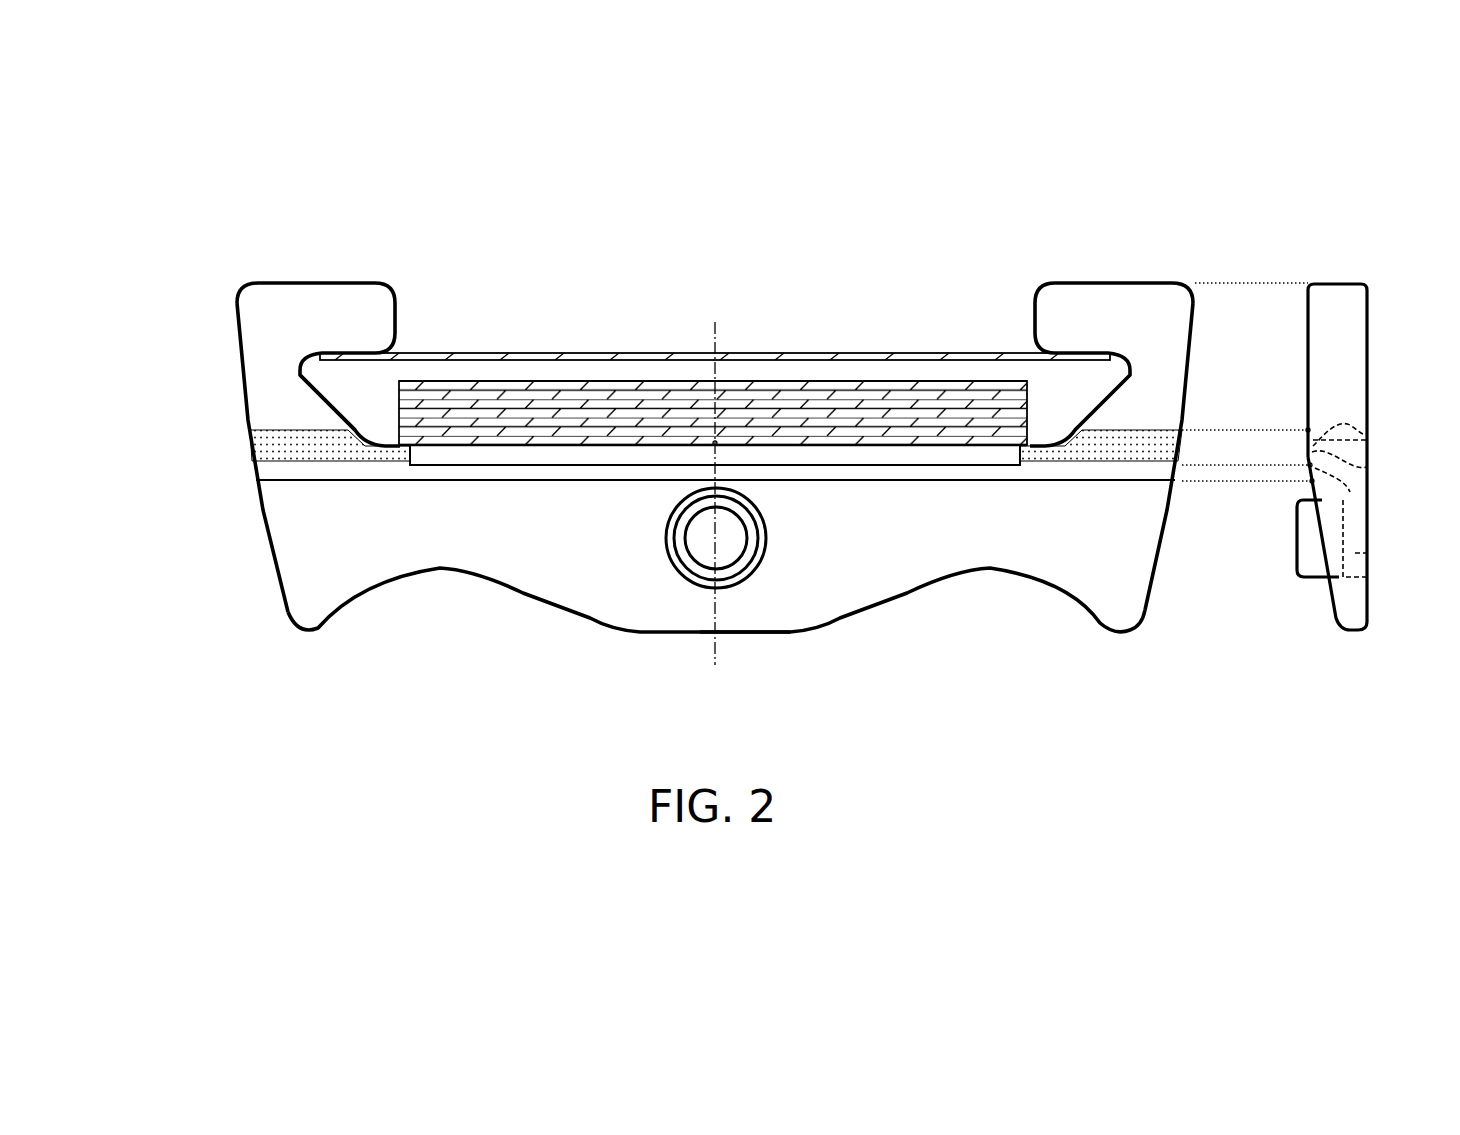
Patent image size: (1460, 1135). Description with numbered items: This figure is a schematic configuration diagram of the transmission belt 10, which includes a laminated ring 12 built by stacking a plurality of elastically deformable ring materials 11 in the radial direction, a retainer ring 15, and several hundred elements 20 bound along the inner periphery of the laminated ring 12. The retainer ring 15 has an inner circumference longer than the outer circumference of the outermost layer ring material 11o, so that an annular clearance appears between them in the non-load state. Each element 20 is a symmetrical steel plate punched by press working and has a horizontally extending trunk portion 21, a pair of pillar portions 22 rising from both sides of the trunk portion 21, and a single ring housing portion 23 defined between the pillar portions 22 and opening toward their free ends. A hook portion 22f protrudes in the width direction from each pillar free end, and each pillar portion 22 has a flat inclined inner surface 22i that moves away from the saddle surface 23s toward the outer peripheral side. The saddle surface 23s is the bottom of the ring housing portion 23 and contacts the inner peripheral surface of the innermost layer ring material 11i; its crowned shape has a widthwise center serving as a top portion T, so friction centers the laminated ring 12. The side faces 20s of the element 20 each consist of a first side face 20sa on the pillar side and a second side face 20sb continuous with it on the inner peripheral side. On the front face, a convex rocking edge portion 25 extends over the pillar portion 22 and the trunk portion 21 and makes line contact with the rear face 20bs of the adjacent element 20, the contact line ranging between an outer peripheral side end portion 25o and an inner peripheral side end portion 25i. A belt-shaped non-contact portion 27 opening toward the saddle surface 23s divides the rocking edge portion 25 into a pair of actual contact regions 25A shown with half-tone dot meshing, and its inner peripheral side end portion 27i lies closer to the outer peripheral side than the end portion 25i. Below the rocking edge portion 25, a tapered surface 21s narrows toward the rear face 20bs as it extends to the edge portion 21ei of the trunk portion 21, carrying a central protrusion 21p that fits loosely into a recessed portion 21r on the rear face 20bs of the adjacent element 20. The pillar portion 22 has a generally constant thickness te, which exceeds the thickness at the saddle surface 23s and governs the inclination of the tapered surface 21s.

The transmission belt 10 is at (765, 322).
The ring material 11 is at (1027, 417).
The outermost layer ring material 11o is at (833, 372).
The innermost layer ring material 11i is at (607, 437).
The laminated ring 12 is at (930, 374).
The retainer ring 15 is at (553, 357).
The element 20 is at (465, 576).
The side face 20s is at (142, 362).
The first side face 20sa is at (240, 374).
The second side face 20sb is at (246, 522).
The rear face 20bs is at (1367, 603).
The trunk portion 21 is at (823, 572).
The tapered surface 21s is at (1040, 533).
The protrusion 21p is at (693, 538).
The edge portion 21ei is at (762, 633).
The recessed portion 21r is at (1362, 556).
The pillar portion 22 is at (308, 307).
The inner surface 22i is at (356, 355).
The hook portion 22f is at (380, 317).
The ring housing portion 23 is at (381, 402).
The saddle surface 23s is at (460, 445).
The rocking edge portion 25 is at (1301, 451).
The actual contact region 25A is at (316, 437).
The outer peripheral side end portion 25o is at (1306, 428).
The inner peripheral side end portion 25i is at (1313, 481).
The non-contact portion 27 is at (870, 456).
The inner peripheral side end portion 27i is at (1355, 492).
The top portion T is at (713, 443).
The thickness te is at (1278, 306).